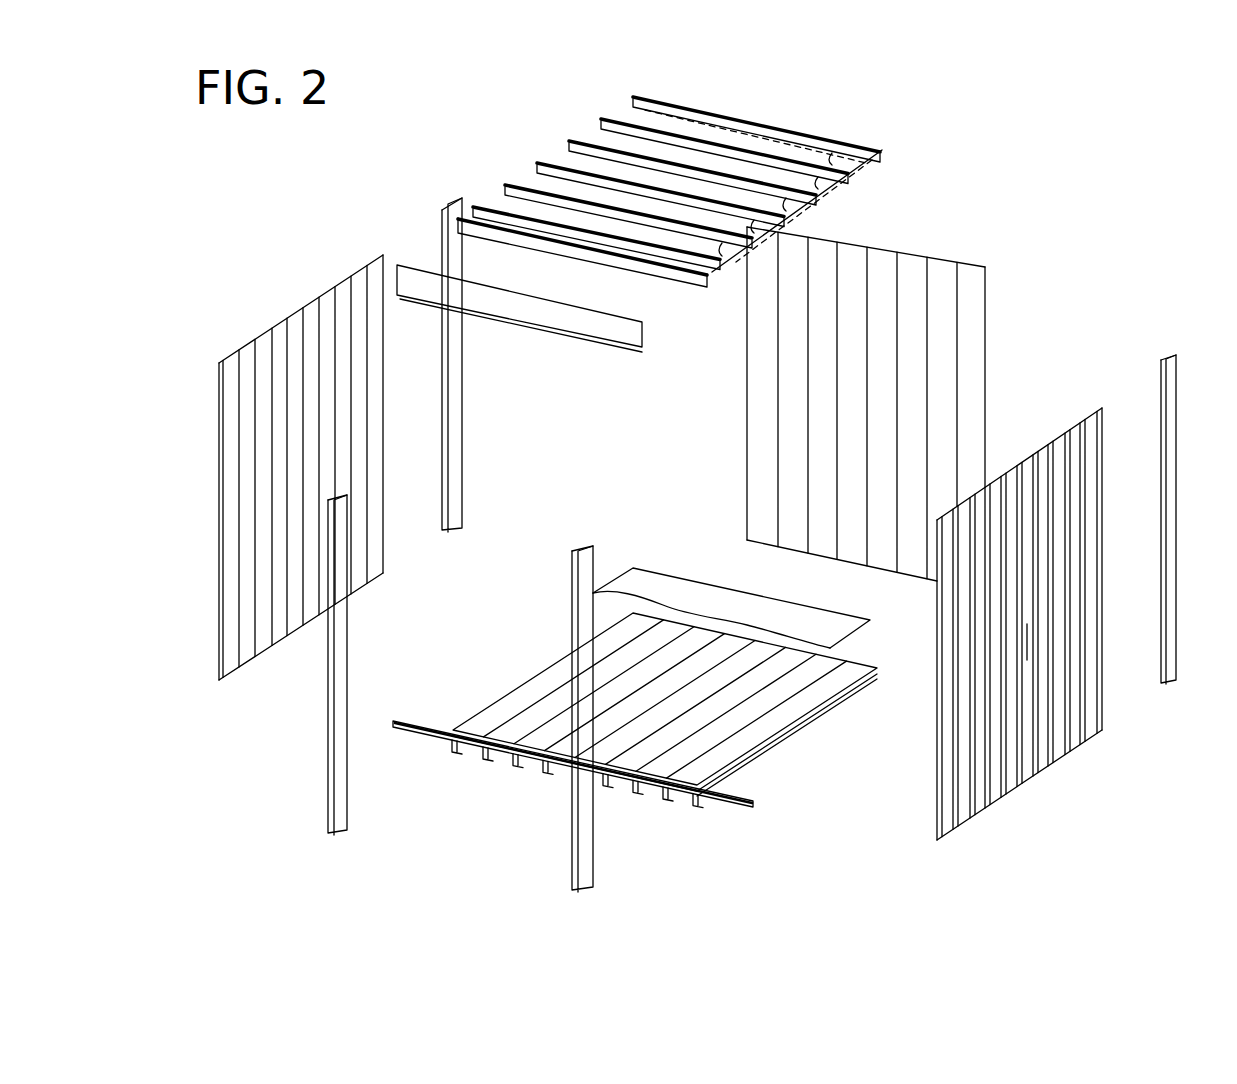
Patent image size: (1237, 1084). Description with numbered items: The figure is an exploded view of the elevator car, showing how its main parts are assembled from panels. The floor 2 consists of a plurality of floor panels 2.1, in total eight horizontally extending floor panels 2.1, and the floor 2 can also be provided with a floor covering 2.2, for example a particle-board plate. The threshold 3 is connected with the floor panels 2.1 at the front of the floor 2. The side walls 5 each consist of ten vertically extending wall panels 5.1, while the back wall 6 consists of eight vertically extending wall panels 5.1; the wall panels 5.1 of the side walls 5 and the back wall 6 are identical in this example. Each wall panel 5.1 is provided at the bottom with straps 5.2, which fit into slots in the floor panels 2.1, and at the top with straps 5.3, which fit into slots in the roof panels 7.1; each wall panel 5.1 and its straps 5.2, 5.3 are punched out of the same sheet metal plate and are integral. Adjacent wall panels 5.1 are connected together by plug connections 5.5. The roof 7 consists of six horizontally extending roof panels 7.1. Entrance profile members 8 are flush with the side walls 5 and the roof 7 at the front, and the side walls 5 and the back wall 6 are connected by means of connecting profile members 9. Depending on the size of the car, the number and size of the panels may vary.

The floor 2 is at (782, 771).
The floor panels 2.1 is at (538, 727).
The floor covering 2.2 is at (650, 587).
The threshold 3 is at (422, 750).
The side walls 5 is at (318, 268).
The wall panels 5.1 is at (297, 538).
The straps 5.2 is at (746, 541).
The straps 5.3 is at (278, 332).
The plug connections 5.5 is at (1025, 623).
The back wall 6 is at (932, 238).
The roof 7 is at (553, 139).
The roof panels 7.1 is at (822, 200).
The entrance profile members 8 is at (548, 316).
The connecting profile members 9 is at (434, 182).